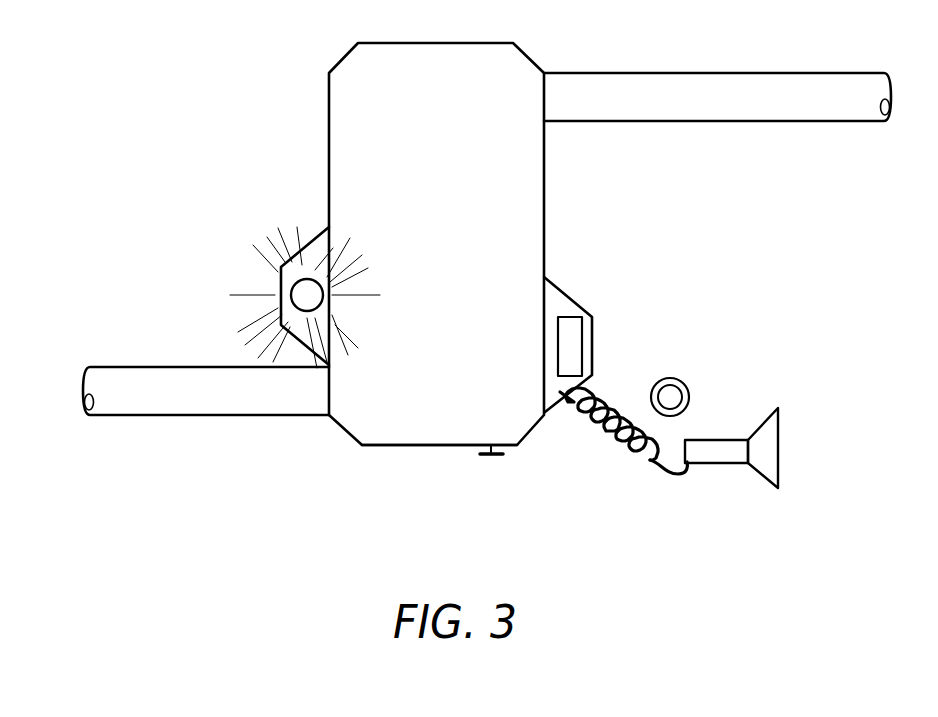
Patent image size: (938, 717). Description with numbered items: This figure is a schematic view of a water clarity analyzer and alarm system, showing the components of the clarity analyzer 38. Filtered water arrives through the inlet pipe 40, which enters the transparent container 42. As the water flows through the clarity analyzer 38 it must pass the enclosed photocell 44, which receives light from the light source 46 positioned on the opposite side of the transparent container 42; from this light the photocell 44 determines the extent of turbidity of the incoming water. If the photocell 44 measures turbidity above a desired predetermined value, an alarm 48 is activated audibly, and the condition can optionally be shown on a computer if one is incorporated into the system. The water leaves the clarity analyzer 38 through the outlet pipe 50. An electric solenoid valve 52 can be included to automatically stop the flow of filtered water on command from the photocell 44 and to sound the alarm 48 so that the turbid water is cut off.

The clarity analyzer 38 is at (426, 478).
The inlet pipe 40 is at (832, 160).
The transparent container 42 is at (386, 131).
The enclosed photocell 44 is at (624, 345).
The light source 46 is at (250, 269).
The alarm 48 is at (715, 496).
The outlet pipe 50 is at (213, 447).
The electric solenoid valve 52 is at (495, 479).